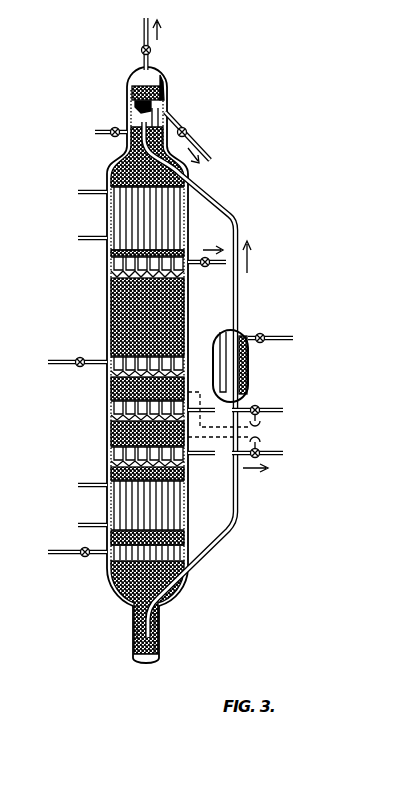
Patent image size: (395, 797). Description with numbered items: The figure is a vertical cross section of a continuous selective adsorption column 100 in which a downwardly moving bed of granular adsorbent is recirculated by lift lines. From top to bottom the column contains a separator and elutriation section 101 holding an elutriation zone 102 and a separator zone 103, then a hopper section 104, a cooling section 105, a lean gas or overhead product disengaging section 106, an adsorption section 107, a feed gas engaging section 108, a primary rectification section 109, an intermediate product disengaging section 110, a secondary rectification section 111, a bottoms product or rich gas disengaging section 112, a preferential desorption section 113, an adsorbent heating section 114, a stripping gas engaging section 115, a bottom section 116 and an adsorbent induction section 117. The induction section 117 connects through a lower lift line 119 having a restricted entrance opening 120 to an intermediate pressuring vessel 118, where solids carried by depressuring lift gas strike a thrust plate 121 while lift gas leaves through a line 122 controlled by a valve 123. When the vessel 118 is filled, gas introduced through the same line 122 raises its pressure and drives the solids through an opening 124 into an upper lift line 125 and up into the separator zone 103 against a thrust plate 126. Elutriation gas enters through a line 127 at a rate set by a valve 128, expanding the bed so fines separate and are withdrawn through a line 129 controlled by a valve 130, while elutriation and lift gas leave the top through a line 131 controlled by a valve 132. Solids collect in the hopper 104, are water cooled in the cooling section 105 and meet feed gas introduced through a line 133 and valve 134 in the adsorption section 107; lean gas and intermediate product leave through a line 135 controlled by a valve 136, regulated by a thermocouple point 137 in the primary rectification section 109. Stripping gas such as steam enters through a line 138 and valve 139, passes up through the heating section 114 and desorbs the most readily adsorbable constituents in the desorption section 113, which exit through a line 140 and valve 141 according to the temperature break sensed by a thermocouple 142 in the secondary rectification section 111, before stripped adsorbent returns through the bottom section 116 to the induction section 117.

The selective adsorption column 100 is at (189, 177).
The separator and elutriation section 101 is at (127, 87).
The elutriation zone 102 is at (163, 97).
The separator zone 103 is at (134, 105).
The hopper section 104 is at (117, 166).
The cooling section 105 is at (121, 208).
The lean gas or overhead product disengaging section 106 is at (118, 265).
The adsorption section 107 is at (135, 298).
The feed gas engaging section 108 is at (106, 353).
The primary rectification section 109 is at (104, 390).
The intermediate product disengaging section 110 is at (102, 426).
The secondary rectification section 111 is at (101, 468).
The bottoms product or rich gas disengaging section 112 is at (108, 486).
The preferential desorption section 113 is at (108, 511).
The adsorbent heating section 114 is at (101, 528).
The stripping gas engaging section 115 is at (118, 598).
The bottom section 116 is at (128, 614).
The adsorbent induction section 117 is at (138, 640).
The intermediate pressuring vessel 118 is at (250, 362).
The lower lift line 119 is at (227, 531).
The entrance opening 120 is at (158, 645).
The thrust plate 121 is at (237, 337).
The line 122 is at (294, 337).
The valve 123 is at (264, 336).
The opening 124 is at (240, 396).
The upper lift line 125 is at (239, 224).
The thrust plate 126 is at (166, 103).
The line 127 is at (99, 133).
The valve 128 is at (98, 135).
The line 129 is at (189, 135).
The valve 130 is at (197, 158).
The line 131 is at (150, 63).
The valve 132 is at (145, 51).
The line 133 is at (56, 347).
The valve 134 is at (78, 366).
The line 135 is at (198, 260).
The valve 136 is at (204, 267).
The thermocouple point 137 is at (101, 408).
The line 138 is at (60, 555).
The valve 139 is at (108, 566).
The line 140 is at (279, 457).
The valve 141 is at (256, 471).
The thermocouple 142 is at (104, 452).